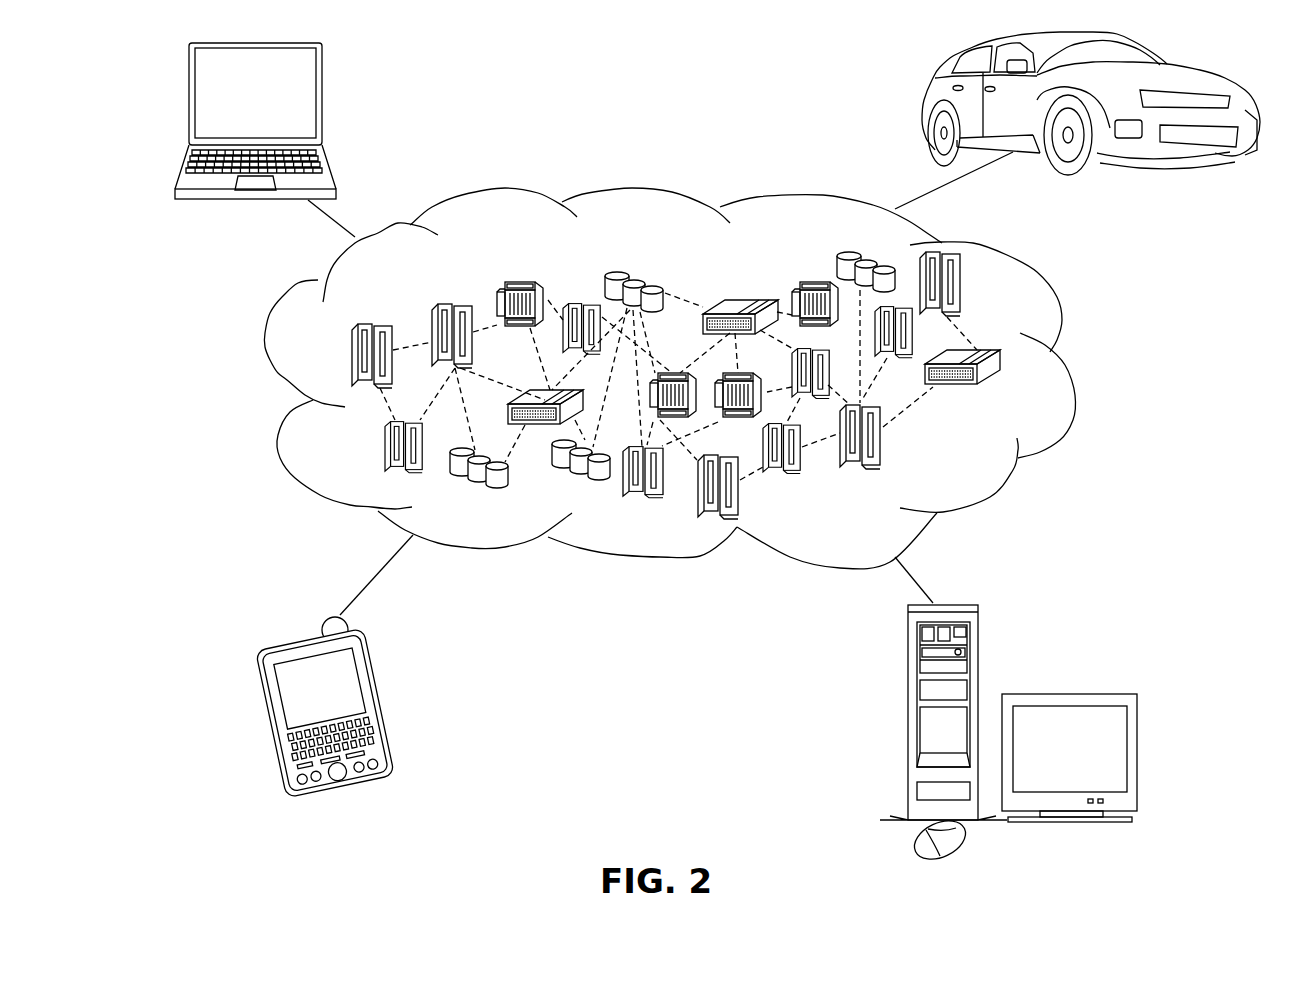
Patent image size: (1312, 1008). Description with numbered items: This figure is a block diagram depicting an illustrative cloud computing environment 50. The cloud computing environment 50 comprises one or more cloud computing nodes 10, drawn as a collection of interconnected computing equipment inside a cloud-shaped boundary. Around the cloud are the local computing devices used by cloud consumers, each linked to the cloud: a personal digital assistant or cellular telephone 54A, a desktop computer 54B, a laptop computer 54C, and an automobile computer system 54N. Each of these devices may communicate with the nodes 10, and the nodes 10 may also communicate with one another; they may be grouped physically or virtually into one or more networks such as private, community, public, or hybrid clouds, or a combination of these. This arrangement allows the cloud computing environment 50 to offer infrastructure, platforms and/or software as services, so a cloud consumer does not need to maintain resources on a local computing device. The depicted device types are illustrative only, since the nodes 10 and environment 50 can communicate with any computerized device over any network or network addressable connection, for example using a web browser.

The cloud computing node 10 is at (988, 468).
The cloud computing environment 50 is at (1073, 368).
The personal digital assistant or cellular telephone 54A is at (372, 677).
The desktop computer 54B is at (908, 660).
The laptop computer 54C is at (322, 80).
The automobile computer system 54N is at (922, 95).